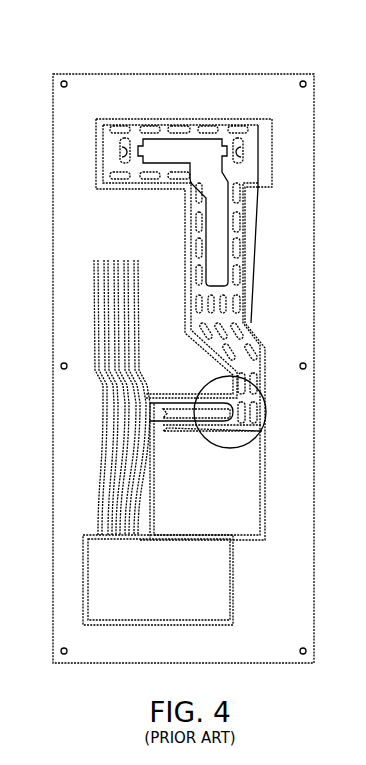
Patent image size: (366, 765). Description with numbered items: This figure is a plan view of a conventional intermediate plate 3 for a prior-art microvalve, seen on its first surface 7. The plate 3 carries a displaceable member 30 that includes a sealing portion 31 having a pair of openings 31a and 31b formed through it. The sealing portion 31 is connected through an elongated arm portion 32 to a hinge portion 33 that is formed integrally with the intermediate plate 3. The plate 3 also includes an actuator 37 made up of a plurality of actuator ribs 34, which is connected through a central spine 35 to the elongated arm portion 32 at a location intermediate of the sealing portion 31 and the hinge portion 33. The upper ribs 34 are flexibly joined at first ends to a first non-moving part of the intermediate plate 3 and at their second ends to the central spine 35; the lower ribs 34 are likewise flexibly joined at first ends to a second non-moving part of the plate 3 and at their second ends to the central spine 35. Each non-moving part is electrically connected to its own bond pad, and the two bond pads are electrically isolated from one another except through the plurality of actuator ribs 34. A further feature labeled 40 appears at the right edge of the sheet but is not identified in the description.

The intermediate plate 3 is at (96, 74).
The first surface 7 is at (263, 90).
The wiring pattern 30 is at (233, 208).
The connection terminal portion 31 is at (247, 142).
The first terminal hole 31a is at (122, 152).
The second terminal hole 31b is at (241, 160).
The lead portion 32 is at (235, 290).
The branch terminal 33 is at (235, 452).
The actuator ribs 34 is at (113, 308).
The connection portion 35 is at (262, 386).
The actuator 37 is at (85, 413).
The external circuit 40 is at (340, 513).